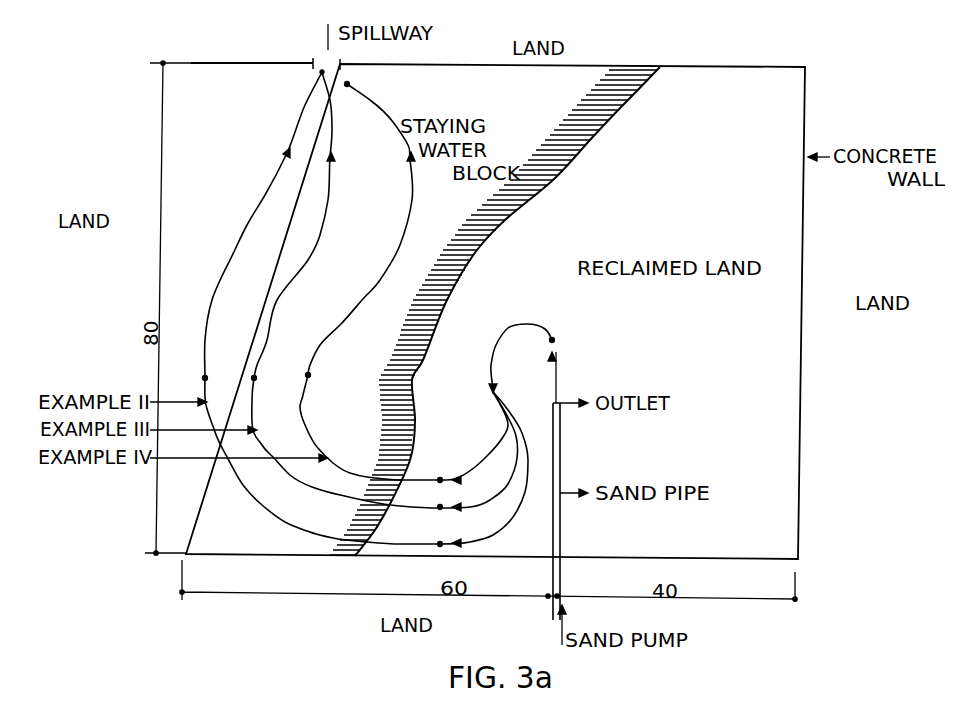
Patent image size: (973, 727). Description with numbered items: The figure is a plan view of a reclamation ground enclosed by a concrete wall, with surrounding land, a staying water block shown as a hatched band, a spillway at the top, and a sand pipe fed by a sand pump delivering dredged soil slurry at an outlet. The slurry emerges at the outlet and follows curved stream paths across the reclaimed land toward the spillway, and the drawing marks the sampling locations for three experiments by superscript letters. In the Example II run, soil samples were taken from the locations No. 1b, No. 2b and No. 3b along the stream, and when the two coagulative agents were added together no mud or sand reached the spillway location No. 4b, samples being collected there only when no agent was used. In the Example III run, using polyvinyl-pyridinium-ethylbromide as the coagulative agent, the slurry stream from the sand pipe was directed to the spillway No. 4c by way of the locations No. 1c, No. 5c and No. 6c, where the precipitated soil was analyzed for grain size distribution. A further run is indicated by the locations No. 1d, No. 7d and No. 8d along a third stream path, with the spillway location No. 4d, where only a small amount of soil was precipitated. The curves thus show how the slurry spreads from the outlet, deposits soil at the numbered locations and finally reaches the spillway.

The sampling location No. 1 (Example II) 1b is at (555, 354).
The sampling location No. 1 (Example III) 1c is at (661, 330).
The sampling location No. 1 (Example IV) 1d is at (732, 330).
The sampling location No. 2 (Example II) 2b is at (451, 532).
The sampling location No. 3 (Example II) 3b is at (233, 368).
The spillway location No. 4 (Example II) 4b is at (377, 74).
The spillway location No. 4 (Example III) 4c is at (451, 74).
The spillway location No. 4 (Example IV) 4d is at (531, 74).
The sampling location No. 5 (Example III) 5c is at (451, 496).
The sampling location No. 6 (Example III) 6c is at (273, 389).
The sampling location No. 7 (Example IV) 7d is at (451, 469).
The sampling location No. 8 (Example IV) 8d is at (337, 367).